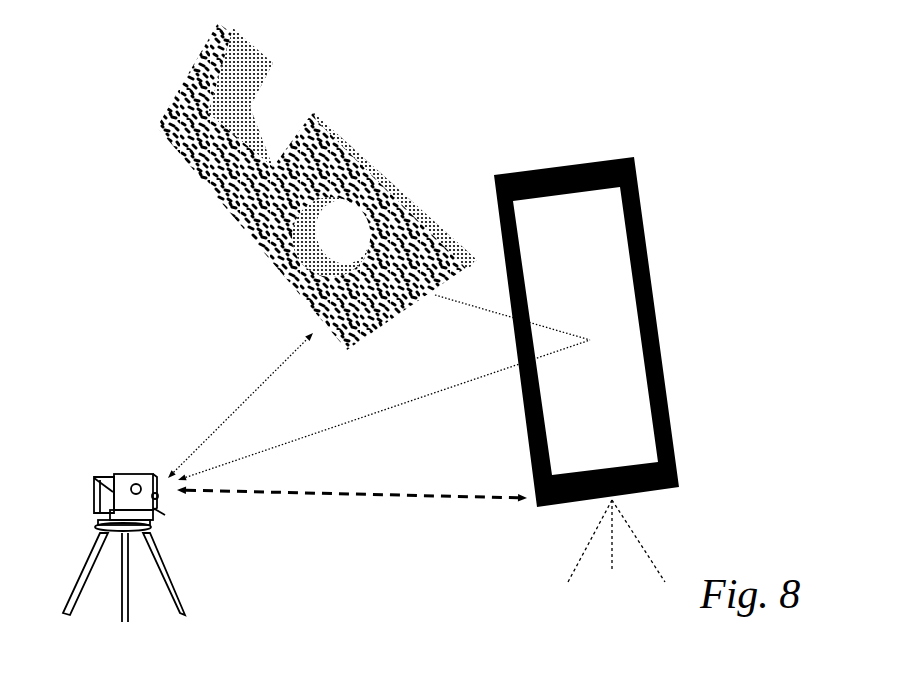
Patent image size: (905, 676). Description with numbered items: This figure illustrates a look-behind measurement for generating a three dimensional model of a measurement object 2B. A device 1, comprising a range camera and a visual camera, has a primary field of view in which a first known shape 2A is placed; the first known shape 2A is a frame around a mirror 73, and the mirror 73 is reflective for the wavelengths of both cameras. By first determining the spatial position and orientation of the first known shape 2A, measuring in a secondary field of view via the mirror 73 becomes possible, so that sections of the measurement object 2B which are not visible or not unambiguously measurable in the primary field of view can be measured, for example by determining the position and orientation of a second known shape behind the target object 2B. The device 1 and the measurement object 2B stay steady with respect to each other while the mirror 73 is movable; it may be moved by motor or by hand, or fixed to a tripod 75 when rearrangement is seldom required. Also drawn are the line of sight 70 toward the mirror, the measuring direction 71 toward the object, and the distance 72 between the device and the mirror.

The device 1 is at (110, 523).
The first known shape 2A is at (617, 317).
The measurement object 2B is at (273, 186).
The line of sight to reference frame 70 is at (331, 381).
The measuring direction to object 71 is at (193, 405).
The distance between device and frame 72 is at (352, 553).
The mirror 73 is at (631, 331).
The tripod 75 is at (662, 540).